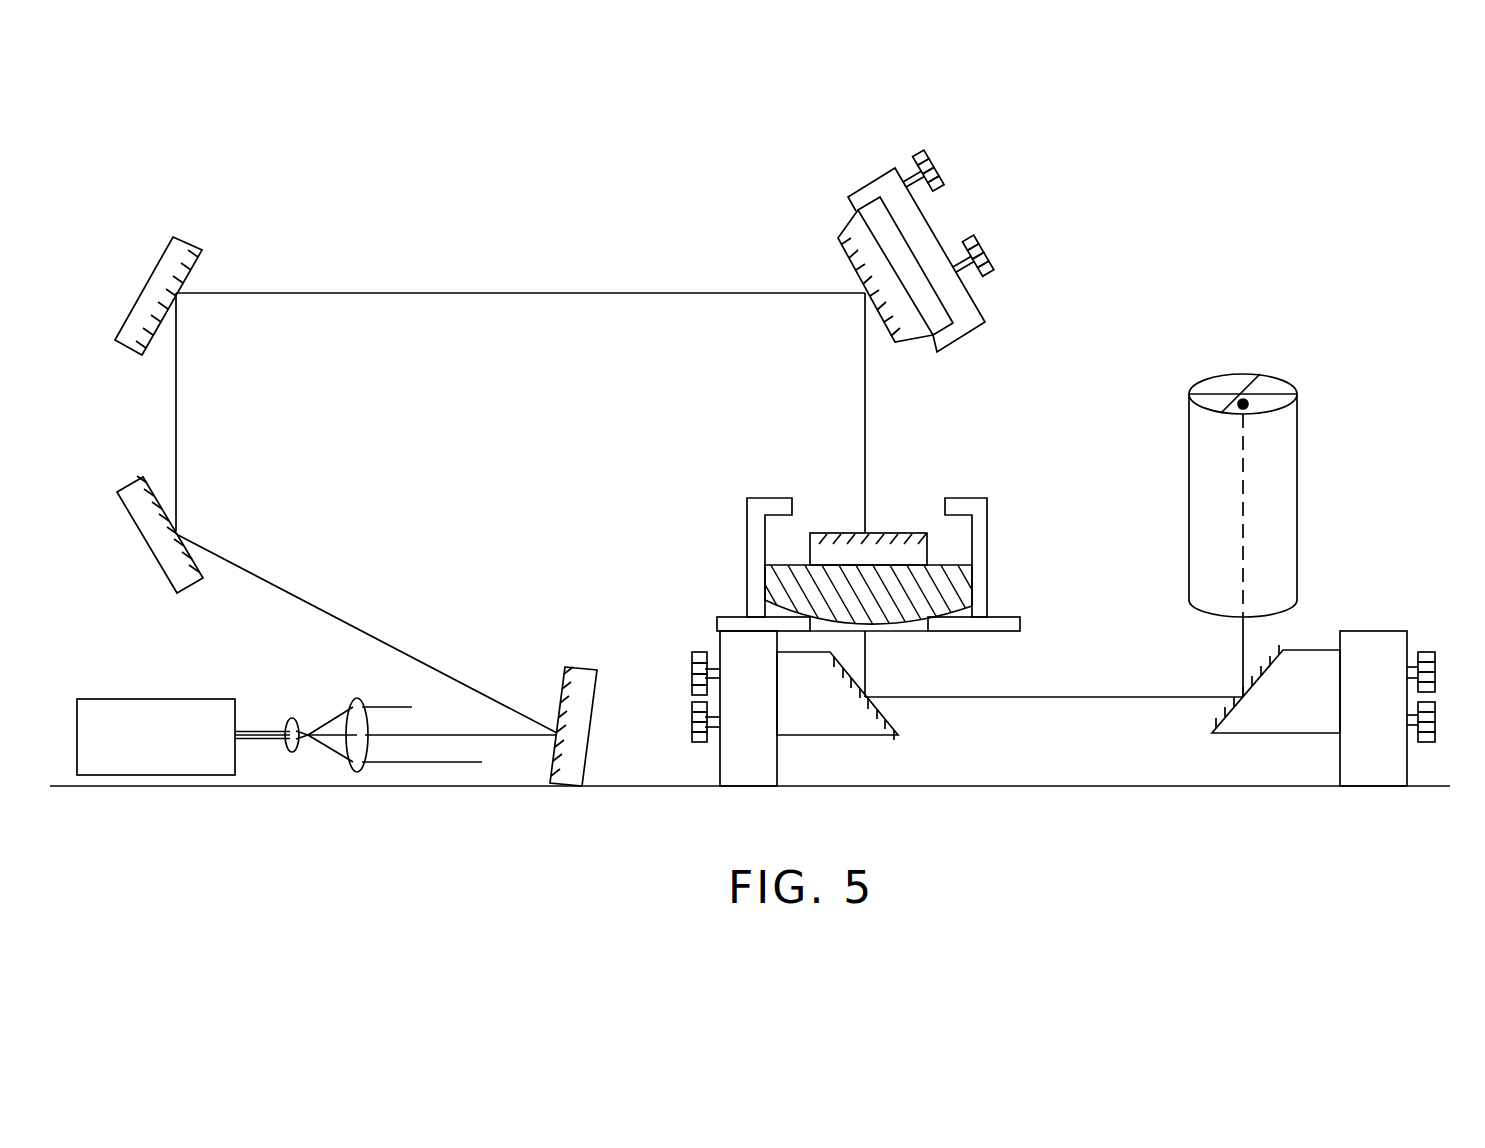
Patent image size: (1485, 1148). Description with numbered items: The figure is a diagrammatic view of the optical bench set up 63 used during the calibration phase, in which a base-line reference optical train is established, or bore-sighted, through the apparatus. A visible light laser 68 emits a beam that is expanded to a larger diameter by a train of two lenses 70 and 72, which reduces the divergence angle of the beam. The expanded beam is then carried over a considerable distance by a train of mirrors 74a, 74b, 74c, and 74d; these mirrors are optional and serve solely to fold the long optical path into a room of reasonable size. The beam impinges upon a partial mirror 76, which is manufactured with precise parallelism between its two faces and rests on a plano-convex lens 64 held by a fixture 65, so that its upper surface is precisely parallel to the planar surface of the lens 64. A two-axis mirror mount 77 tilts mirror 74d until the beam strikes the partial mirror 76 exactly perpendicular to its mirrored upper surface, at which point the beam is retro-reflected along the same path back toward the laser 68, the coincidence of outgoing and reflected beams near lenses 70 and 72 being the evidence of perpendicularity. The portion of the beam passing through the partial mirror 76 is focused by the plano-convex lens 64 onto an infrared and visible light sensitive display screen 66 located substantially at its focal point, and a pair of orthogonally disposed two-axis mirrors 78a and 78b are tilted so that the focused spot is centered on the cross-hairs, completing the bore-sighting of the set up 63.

The optical bench set up 63 is at (347, 210).
The plano-convex lens 64 is at (955, 583).
The fixture 65 is at (968, 498).
The infrared and visible light sensitive display screen 66 is at (1297, 470).
The visible light laser 68 is at (180, 699).
The lens 70 is at (292, 718).
The lens 72 is at (357, 698).
The mirror 74a is at (598, 685).
The mirror 74b is at (150, 556).
The mirror 74c is at (147, 282).
The mirror 74d is at (840, 252).
The partial mirror 76 is at (845, 533).
The two-axis mirror mount 77 is at (975, 302).
The two-axis mirror 78a is at (867, 737).
The two-axis mirror 78b is at (1262, 735).